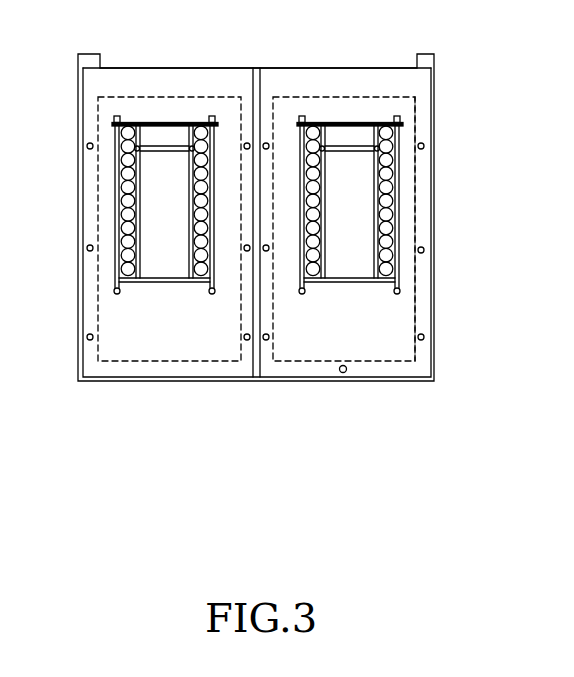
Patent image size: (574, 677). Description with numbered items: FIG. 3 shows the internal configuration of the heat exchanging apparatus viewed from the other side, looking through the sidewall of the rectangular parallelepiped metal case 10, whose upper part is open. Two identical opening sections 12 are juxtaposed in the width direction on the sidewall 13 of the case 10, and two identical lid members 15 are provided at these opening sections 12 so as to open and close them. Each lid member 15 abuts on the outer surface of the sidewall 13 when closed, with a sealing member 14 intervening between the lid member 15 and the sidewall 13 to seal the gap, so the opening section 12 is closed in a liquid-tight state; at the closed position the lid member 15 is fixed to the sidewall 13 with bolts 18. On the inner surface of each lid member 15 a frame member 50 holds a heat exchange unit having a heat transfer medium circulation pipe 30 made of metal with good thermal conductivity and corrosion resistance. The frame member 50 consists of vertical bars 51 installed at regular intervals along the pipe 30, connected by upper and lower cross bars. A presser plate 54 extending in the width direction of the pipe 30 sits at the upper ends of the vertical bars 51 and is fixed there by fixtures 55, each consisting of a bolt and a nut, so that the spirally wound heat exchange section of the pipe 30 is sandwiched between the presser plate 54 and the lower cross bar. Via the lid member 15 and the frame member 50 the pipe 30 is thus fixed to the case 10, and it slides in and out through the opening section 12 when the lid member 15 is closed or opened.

The case 10 is at (435, 87).
The opening section 12 is at (152, 358).
The sidewall 13 is at (433, 303).
The sealing member 14 is at (424, 116).
The lid member 15 is at (143, 82).
The bolt 18 is at (87, 146).
The heat transfer medium circulation pipe 30 is at (118, 258).
The frame member 50 is at (114, 175).
The vertical bar 51 is at (118, 204).
The presser plate 54 is at (180, 123).
The fixture 55 is at (117, 116).